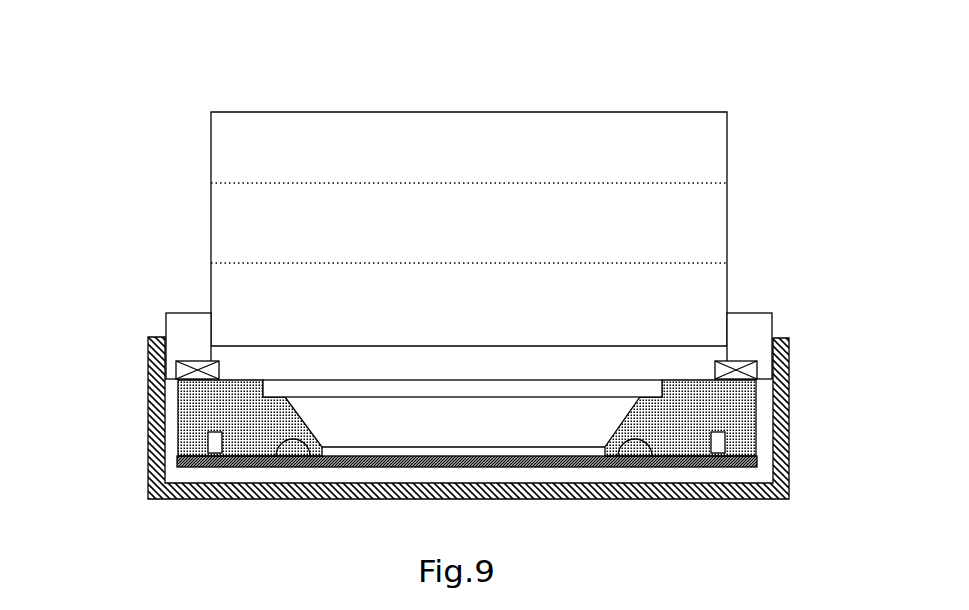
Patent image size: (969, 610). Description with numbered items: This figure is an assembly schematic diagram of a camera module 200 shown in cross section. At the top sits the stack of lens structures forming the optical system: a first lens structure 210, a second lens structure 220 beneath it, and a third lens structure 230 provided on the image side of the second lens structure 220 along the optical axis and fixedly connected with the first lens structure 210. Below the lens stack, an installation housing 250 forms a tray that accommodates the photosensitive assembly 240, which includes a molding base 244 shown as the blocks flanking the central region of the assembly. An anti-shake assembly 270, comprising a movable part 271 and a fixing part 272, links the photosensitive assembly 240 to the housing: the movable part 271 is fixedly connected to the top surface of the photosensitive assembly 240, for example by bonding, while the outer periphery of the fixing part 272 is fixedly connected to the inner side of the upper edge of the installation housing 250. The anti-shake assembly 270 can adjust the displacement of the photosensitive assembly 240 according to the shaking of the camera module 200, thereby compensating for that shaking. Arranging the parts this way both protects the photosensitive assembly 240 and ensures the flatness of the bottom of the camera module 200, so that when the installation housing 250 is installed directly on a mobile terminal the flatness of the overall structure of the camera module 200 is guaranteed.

The camera module 200 is at (495, 83).
The first lens structure 210 is at (702, 162).
The second lens structure 220 is at (702, 229).
The third lens structure 230 is at (702, 293).
The photosensitive assembly 240 is at (759, 400).
The molding base 244 is at (178, 395).
The installation housing 250 is at (789, 471).
The anti-shake assembly 270 is at (85, 310).
The movable part 271 is at (176, 364).
The fixing part 272 is at (166, 331).